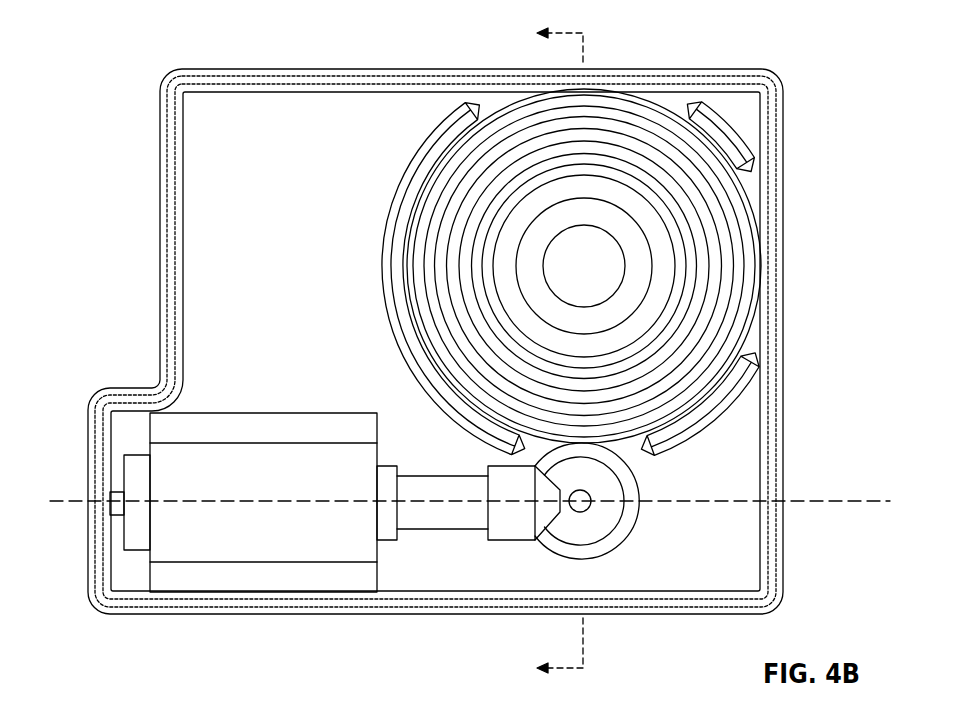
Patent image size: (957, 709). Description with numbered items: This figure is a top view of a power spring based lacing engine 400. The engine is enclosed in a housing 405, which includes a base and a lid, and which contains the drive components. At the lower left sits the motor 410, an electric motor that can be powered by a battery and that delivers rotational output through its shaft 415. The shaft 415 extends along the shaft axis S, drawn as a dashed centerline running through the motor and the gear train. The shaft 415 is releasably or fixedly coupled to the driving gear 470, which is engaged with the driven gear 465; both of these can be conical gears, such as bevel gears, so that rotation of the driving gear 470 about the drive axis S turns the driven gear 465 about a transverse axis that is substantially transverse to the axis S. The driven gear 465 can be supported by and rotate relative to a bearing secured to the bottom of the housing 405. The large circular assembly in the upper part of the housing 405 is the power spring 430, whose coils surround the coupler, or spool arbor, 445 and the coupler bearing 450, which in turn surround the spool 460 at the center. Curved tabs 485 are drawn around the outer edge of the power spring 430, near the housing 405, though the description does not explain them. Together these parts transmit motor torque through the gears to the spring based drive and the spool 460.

The power spring based lacing engine 400 is at (741, 44).
The housing 405 is at (158, 102).
The motor 410 is at (275, 543).
The shaft 415 is at (504, 528).
The power spring 430 is at (452, 273).
The coupler (spool arbor) 445 is at (610, 315).
The coupler bearing 450 is at (592, 185).
The spool 460 is at (600, 263).
The driven gear 465 is at (606, 508).
The driving gear 470 is at (550, 513).
The retaining tabs 485 is at (413, 158).
The shaft axis S is at (78, 500).